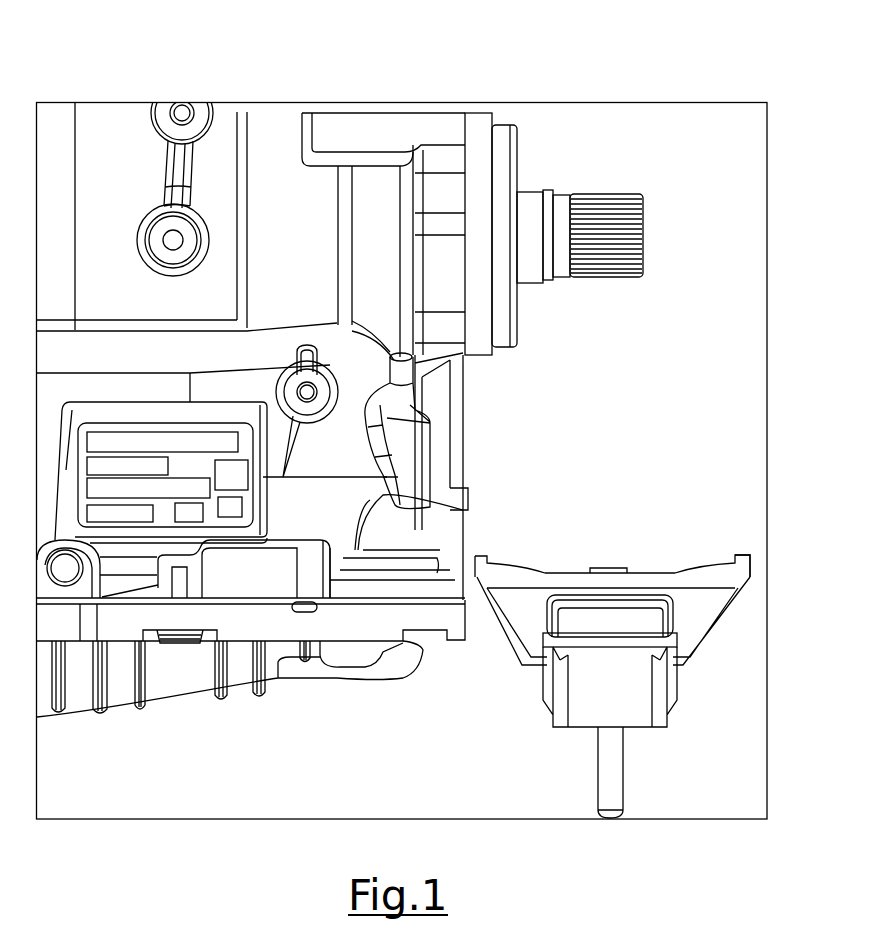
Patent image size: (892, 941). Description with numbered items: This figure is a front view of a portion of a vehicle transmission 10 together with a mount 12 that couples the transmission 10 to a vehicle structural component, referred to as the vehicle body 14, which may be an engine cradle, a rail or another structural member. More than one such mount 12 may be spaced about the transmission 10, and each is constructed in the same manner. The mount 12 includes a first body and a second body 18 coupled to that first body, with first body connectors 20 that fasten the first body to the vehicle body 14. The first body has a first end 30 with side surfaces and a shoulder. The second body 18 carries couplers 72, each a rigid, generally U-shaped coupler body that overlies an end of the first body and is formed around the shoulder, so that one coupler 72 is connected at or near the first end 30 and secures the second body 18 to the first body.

The vehicle transmission 10 is at (283, 101).
The mount 12 is at (746, 627).
The vehicle body 14 is at (182, 685).
The second body 18 is at (755, 561).
The first body connectors 20 is at (617, 755).
The first end 30 is at (583, 690).
The couplers 72 is at (633, 598).